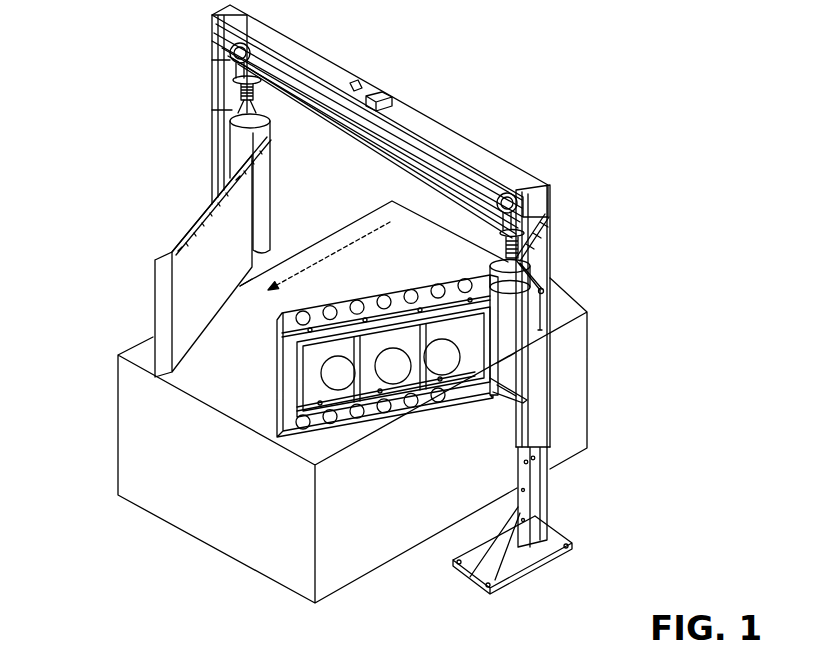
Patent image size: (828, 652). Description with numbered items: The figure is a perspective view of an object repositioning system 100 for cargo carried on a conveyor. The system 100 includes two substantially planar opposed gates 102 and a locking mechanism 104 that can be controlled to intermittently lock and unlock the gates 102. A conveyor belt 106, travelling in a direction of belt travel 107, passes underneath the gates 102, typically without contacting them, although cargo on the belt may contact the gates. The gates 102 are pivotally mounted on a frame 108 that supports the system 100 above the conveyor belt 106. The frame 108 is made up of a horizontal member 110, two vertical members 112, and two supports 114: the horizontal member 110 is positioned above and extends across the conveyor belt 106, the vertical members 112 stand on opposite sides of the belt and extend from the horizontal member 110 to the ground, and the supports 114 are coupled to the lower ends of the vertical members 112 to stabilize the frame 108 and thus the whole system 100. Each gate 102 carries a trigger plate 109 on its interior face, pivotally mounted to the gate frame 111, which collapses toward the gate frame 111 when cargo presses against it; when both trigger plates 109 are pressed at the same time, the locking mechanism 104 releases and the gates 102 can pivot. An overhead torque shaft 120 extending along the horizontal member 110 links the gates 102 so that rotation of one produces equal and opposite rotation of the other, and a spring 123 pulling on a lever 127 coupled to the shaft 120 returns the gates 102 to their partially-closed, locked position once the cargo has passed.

The object repositioning system 100 is at (44, 114).
The gates 102 is at (166, 200).
The locking mechanism 104 is at (483, 412).
The conveyor belt 106 is at (217, 388).
The direction of belt travel 107 is at (342, 248).
The frame 108 is at (374, 62).
The trigger plate 109 is at (367, 292).
The horizontal member 110 is at (410, 112).
The gate frame 111 is at (170, 252).
The vertical members 112 is at (213, 93).
The supports 114 is at (548, 520).
The torque shaft 120 is at (397, 133).
The spring 123 is at (540, 259).
The lever 127 is at (540, 232).